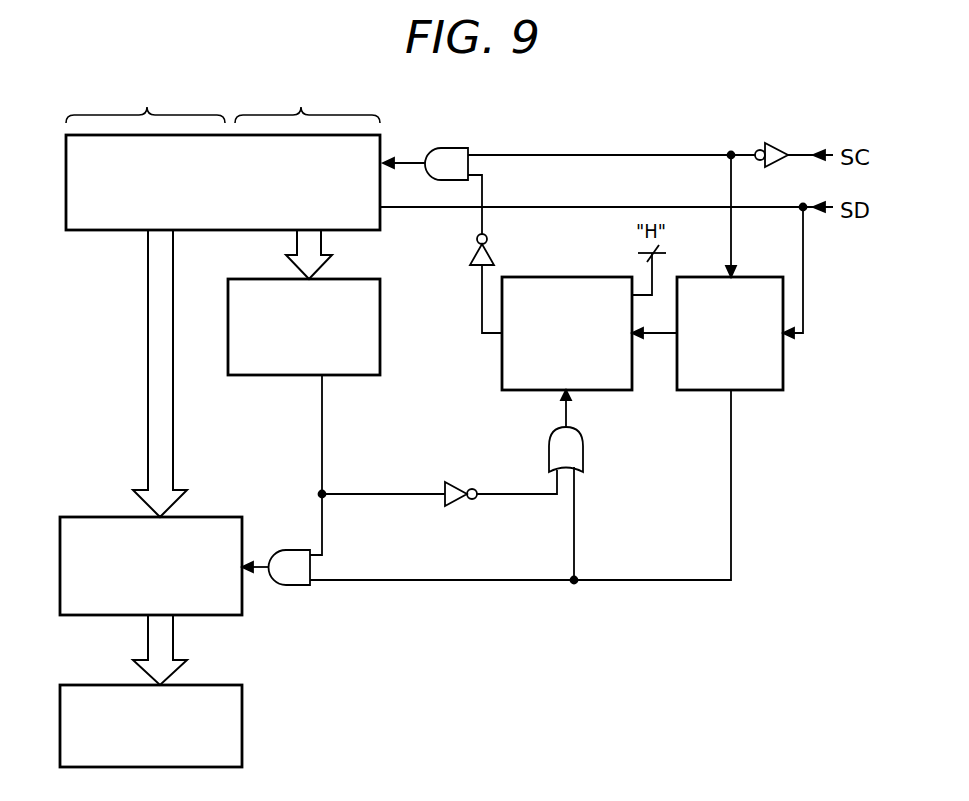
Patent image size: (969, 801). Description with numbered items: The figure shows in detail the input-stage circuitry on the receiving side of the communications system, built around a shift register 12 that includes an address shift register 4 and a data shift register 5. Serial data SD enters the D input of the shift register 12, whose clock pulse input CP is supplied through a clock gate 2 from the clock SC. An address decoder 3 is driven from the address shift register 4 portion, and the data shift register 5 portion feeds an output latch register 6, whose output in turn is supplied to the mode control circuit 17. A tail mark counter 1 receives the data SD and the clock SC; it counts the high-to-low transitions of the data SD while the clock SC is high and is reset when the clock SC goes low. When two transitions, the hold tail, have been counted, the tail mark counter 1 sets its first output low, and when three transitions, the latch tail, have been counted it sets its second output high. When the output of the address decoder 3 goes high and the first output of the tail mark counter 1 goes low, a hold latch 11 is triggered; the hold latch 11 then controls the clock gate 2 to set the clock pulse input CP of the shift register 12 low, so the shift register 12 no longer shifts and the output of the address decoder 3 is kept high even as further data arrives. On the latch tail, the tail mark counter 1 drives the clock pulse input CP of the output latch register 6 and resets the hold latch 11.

The tail mark counter 1 is at (773, 391).
The clock gate 2 is at (462, 147).
The address decoder 3 is at (243, 376).
The address shift register 4 is at (307, 101).
The data shift register 5 is at (145, 101).
The output latch register 6 is at (230, 516).
The hold latch 11 is at (620, 391).
The shift register 12 is at (83, 231).
The mode control circuit 17 is at (242, 696).